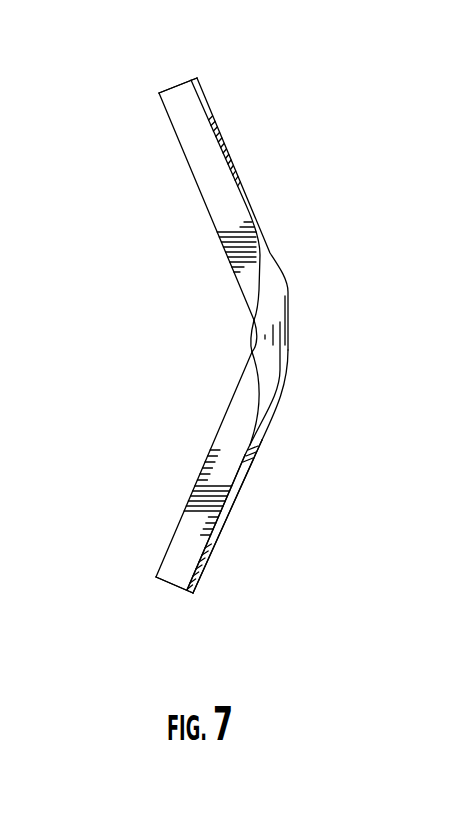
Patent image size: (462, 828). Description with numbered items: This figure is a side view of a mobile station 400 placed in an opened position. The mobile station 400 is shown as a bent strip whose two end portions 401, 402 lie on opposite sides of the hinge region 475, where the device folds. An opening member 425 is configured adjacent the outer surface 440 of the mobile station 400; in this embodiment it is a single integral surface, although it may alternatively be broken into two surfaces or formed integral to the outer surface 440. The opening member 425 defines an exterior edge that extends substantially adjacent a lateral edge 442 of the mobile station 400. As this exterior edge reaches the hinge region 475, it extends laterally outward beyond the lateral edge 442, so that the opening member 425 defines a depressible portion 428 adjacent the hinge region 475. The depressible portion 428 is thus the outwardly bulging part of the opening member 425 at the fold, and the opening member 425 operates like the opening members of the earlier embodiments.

The mobile station 400 is at (242, 372).
The first end portion 401 is at (177, 112).
The second end portion 402 is at (178, 558).
The outer surface 440 is at (240, 180).
The lateral edge 442 is at (216, 453).
The depressible portion 428 is at (272, 333).
The hinge region 475 is at (230, 344).
The opening member 425 is at (236, 497).